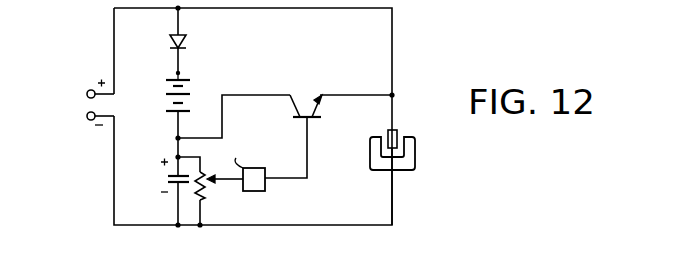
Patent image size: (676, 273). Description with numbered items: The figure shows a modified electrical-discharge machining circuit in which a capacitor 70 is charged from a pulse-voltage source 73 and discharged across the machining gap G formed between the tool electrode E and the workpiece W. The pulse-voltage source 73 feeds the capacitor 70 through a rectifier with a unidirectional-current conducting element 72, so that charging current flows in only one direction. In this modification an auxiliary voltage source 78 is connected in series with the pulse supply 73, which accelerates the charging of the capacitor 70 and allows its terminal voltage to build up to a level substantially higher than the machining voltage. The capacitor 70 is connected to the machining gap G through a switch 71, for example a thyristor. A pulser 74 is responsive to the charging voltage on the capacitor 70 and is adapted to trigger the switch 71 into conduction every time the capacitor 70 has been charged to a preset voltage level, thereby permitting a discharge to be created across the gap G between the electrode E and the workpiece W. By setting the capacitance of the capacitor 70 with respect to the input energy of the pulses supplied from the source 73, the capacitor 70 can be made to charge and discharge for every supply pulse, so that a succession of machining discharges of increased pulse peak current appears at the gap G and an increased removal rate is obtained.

The capacitor 70 is at (165, 180).
The switch 71 is at (310, 104).
The unidirectional-current conducting element 72 is at (188, 42).
The pulse-voltage source 73 is at (88, 111).
The pulser 74 is at (264, 190).
The auxiliary voltage source 78 is at (160, 95).
The electrode E is at (399, 134).
The machining gap G is at (403, 152).
The workpiece W is at (408, 172).